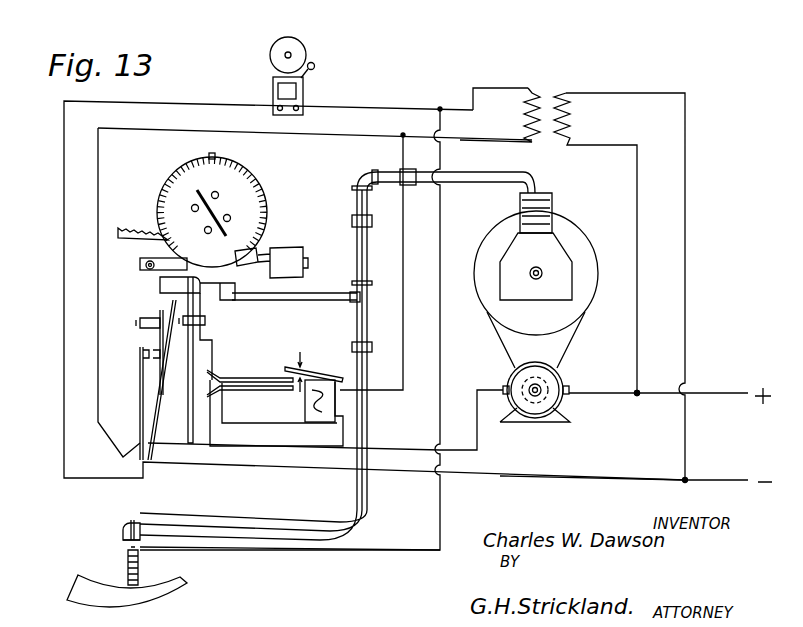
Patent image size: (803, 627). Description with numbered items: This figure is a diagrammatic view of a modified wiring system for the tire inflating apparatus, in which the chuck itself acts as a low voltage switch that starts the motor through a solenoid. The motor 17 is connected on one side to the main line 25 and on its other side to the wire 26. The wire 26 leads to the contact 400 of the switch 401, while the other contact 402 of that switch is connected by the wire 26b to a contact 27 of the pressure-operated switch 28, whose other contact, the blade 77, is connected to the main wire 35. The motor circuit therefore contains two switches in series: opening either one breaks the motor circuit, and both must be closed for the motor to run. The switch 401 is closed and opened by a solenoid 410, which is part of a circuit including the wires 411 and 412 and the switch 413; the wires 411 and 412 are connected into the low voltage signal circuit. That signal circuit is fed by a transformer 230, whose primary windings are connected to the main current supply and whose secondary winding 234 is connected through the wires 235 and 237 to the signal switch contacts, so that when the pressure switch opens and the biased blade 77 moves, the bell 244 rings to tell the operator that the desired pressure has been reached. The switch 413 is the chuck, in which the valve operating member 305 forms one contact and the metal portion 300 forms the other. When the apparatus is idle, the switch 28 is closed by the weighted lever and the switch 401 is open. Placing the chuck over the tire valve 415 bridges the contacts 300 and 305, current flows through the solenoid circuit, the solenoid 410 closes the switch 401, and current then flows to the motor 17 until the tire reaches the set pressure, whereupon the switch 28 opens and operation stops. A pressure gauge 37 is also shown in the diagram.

The wire 237 is at (64, 183).
The wire 235 is at (128, 130).
The bell 244 is at (300, 50).
The secondary winding 234 is at (538, 93).
The transformer 230 is at (570, 92).
The pressure gauge 37 is at (293, 199).
The blade 77 is at (175, 286).
The contact 27 is at (184, 298).
The switch 28 is at (124, 360).
The wire 26b is at (205, 347).
The wire 26 is at (475, 412).
The main line 25 is at (605, 396).
The main wire 35 is at (588, 482).
The motor 17 is at (541, 408).
The contact 400 is at (290, 386).
The switch 401 is at (291, 358).
The contact 402 is at (290, 378).
The solenoid 410 is at (330, 380).
The wire 411 is at (433, 537).
The wire 412 is at (340, 496).
The valve operating member 305 is at (132, 523).
The switch 413 is at (106, 534).
The metal portion 300 is at (123, 536).
The tire valve 415 is at (140, 575).